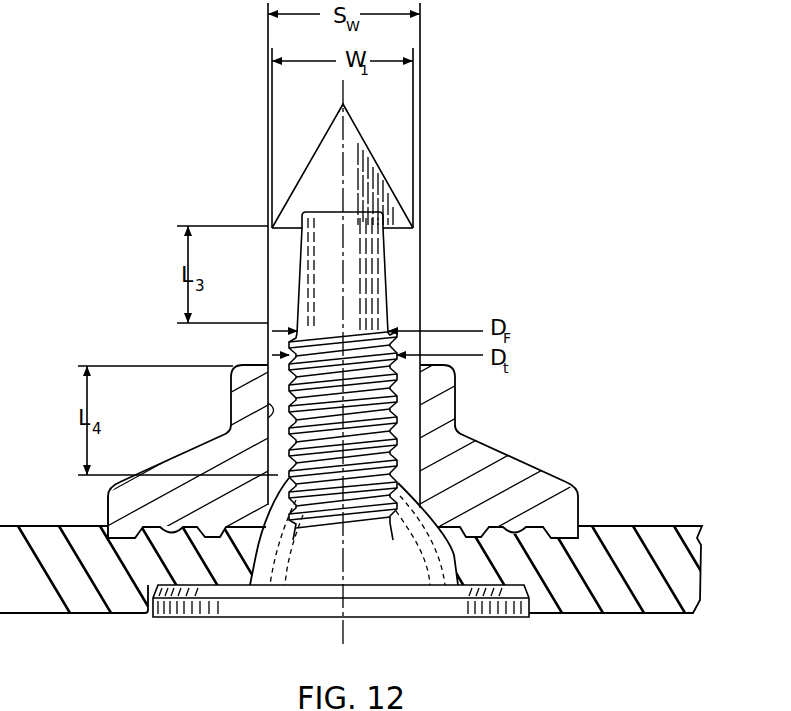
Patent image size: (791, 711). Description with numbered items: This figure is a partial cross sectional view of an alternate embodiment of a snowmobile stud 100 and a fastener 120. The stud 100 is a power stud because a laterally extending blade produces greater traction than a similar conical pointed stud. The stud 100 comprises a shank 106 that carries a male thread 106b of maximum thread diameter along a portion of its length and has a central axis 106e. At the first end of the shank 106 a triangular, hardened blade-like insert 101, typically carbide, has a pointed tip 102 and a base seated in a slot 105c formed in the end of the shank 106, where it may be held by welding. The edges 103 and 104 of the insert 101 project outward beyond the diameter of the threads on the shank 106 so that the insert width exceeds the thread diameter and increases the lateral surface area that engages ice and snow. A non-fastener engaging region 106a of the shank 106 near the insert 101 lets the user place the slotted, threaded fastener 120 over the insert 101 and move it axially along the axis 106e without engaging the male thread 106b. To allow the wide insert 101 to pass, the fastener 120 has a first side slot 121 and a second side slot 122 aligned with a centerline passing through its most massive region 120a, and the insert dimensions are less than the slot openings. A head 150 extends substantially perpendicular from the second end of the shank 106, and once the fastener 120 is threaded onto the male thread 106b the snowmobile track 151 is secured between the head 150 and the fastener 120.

The stud 100 is at (390, 362).
The blade insert 101 is at (356, 147).
The pointed tip 102 is at (343, 104).
The edge 103 is at (270, 231).
The edge 104 is at (414, 233).
The slot 105c is at (322, 211).
The shank 106 is at (369, 334).
The non-fastener engaging region 106a is at (367, 276).
The male thread 106b is at (406, 483).
The central axis 106e is at (343, 89).
The fastener 120 is at (306, 470).
The most massive region 120a is at (108, 506).
The side slot 121 is at (450, 434).
The side slot 122 is at (264, 405).
The head 150 is at (452, 608).
The snowmobile track 151 is at (617, 606).